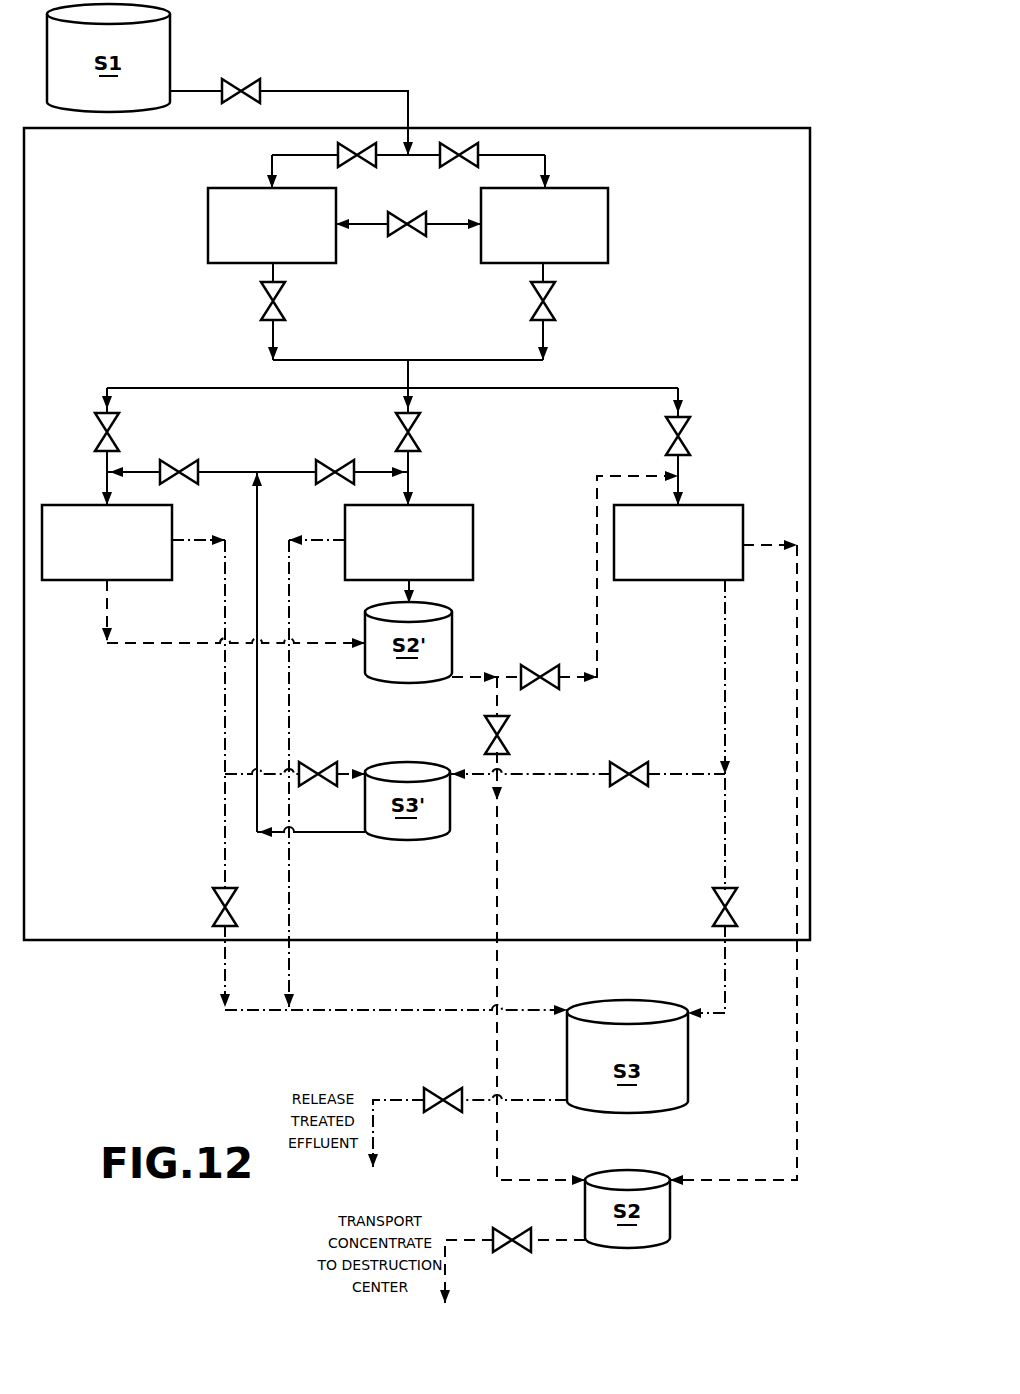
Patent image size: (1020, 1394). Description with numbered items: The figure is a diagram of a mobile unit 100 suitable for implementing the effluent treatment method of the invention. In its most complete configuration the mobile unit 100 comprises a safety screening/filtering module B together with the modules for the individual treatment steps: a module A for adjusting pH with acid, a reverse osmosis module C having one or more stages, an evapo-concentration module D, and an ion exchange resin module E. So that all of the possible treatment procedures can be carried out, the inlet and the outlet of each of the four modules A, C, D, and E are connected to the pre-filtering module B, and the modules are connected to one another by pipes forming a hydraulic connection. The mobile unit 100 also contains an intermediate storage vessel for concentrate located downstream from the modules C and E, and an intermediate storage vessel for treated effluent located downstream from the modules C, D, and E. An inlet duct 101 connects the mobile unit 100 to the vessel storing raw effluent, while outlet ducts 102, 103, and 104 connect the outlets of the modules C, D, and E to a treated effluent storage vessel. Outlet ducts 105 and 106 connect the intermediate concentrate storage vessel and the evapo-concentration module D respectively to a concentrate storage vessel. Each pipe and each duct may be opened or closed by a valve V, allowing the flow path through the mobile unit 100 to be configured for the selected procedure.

The mobile unit 100 is at (697, 128).
The inlet duct 101 is at (408, 96).
The outlet duct 102 is at (225, 978).
The outlet duct 103 is at (289, 975).
The outlet duct 104 is at (724, 970).
The outlet duct 105 is at (497, 976).
The outlet duct 106 is at (797, 1134).
The valve V is at (241, 79).
The module for adjusting pH with acid A is at (222, 265).
The safety screening/filtering module B is at (490, 265).
The reverse osmosis module C is at (70, 582).
The evapo-concentration module D is at (664, 584).
The ion exchange resin module E is at (360, 582).